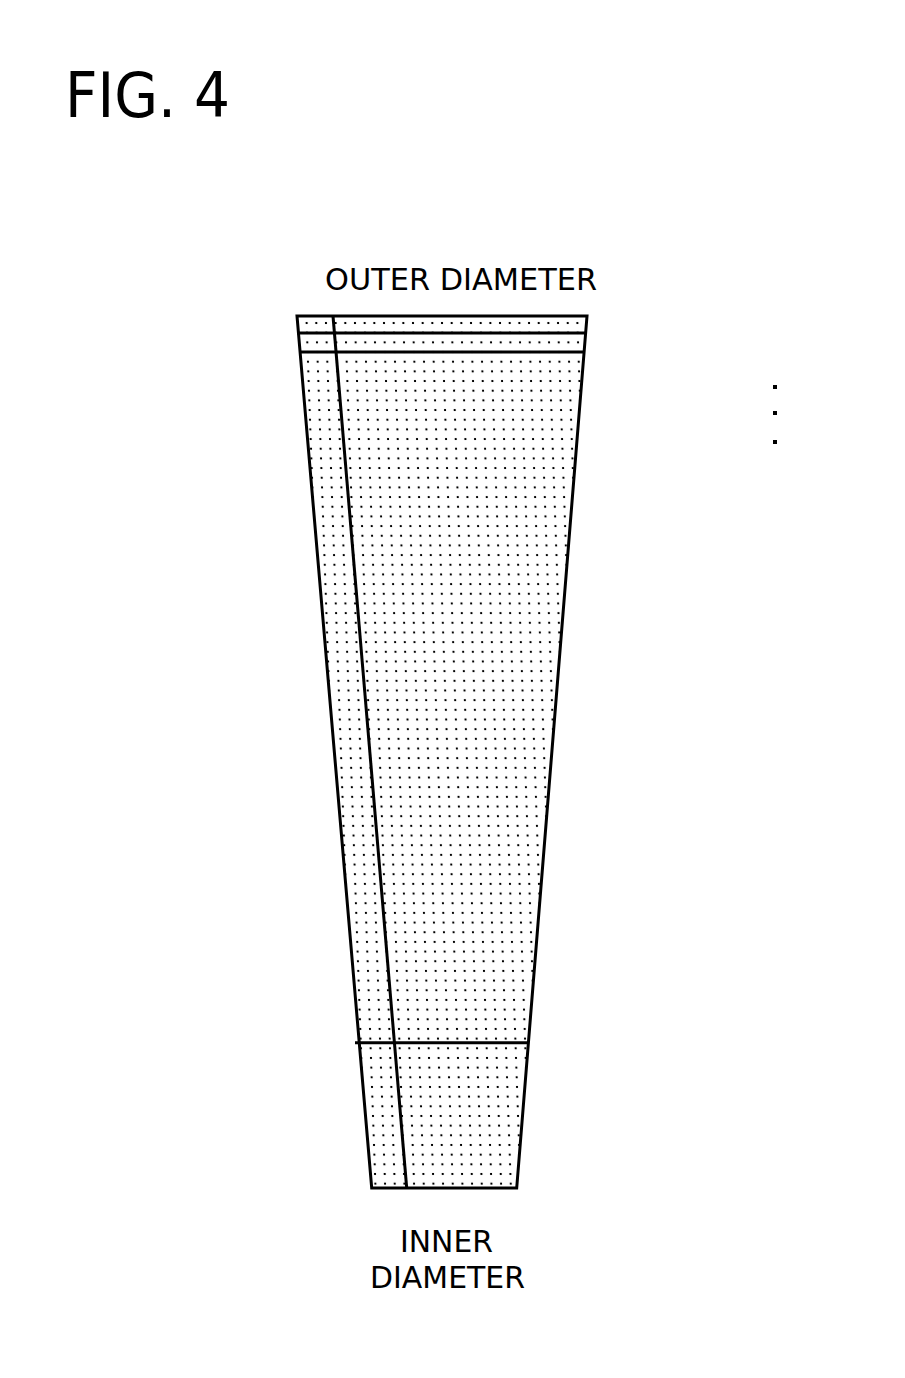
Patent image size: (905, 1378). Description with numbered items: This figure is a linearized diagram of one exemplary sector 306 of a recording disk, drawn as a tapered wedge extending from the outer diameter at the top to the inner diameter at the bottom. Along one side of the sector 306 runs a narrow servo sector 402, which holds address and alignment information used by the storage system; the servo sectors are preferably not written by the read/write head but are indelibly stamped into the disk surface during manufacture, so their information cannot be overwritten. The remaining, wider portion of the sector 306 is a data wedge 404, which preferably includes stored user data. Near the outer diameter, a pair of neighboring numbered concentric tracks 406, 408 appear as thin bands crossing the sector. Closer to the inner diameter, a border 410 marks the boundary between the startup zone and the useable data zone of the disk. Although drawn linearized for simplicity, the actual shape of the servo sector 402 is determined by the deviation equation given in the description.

The sector 306 is at (599, 148).
The servo sector 402 is at (312, 584).
The data wedge 404 is at (515, 510).
The concentric track 406 is at (619, 330).
The concentric track 408 is at (619, 350).
The border 410 is at (575, 1056).